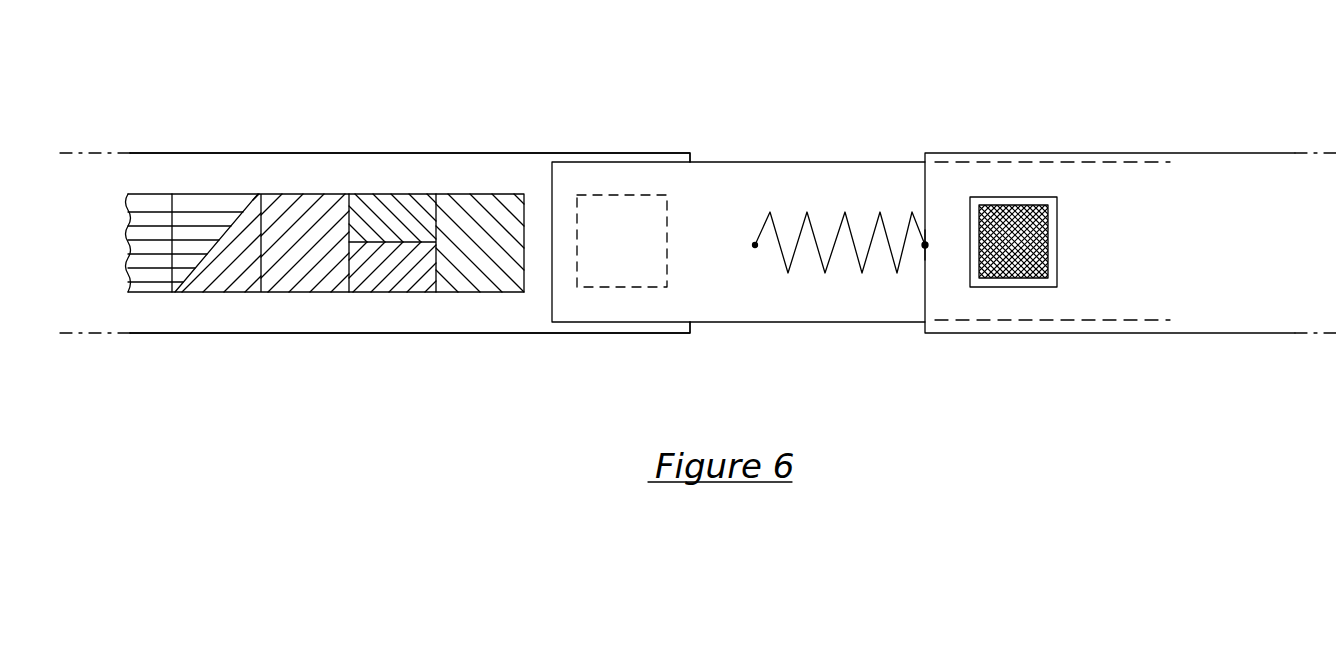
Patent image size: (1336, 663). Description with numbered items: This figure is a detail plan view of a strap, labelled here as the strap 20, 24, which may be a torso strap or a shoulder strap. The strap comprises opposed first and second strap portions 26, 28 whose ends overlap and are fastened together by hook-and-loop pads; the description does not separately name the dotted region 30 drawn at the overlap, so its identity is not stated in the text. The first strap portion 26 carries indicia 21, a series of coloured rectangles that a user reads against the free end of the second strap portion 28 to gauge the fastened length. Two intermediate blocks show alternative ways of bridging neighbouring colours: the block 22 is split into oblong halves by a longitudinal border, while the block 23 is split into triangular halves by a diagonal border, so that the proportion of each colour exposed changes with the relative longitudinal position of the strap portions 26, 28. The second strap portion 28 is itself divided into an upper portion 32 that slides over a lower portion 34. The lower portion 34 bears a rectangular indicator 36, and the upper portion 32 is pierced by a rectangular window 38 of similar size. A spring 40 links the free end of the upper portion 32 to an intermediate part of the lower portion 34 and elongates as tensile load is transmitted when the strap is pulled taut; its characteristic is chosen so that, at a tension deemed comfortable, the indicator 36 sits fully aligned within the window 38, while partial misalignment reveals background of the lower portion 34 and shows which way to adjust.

The torso strap 20 is at (1148, 119).
The outer tube 24 is at (1150, 115).
The indicia 21 is at (476, 290).
The block 22 is at (380, 278).
The block 23 is at (197, 217).
The first strap portion 26 is at (345, 178).
The second strap portion 28 is at (613, 308).
The piston region 30 is at (607, 215).
The upper portion 32 is at (1148, 297).
The lower portion 34 is at (765, 180).
The rectangular indicator 36 is at (1003, 205).
The rectangular window 38 is at (1030, 287).
The spring 40 is at (855, 258).